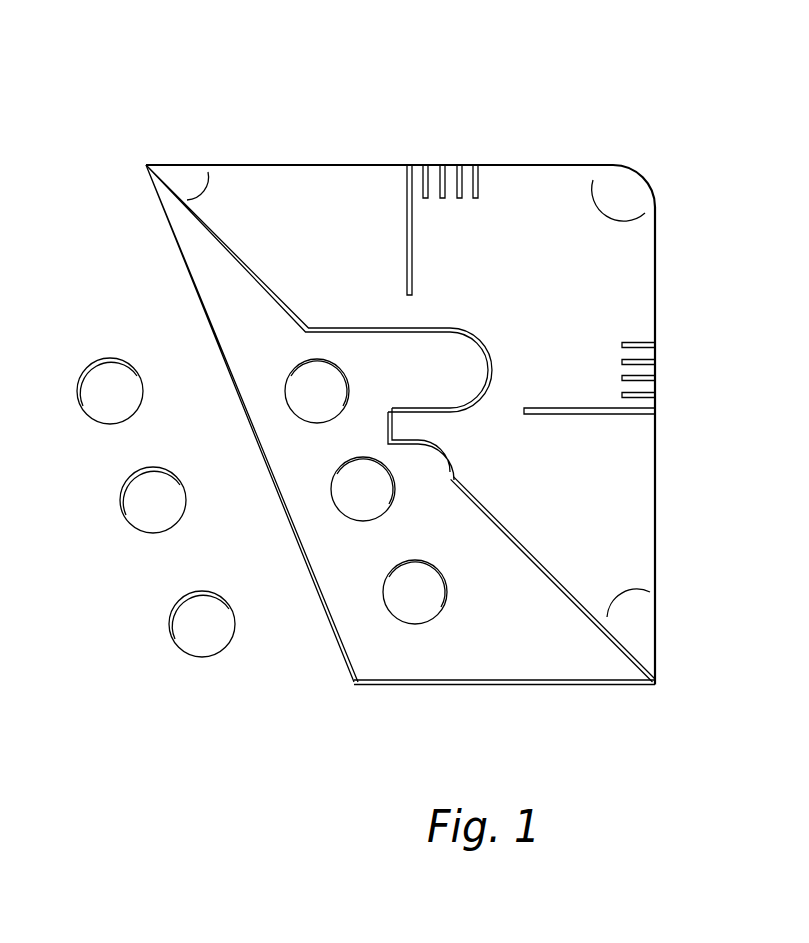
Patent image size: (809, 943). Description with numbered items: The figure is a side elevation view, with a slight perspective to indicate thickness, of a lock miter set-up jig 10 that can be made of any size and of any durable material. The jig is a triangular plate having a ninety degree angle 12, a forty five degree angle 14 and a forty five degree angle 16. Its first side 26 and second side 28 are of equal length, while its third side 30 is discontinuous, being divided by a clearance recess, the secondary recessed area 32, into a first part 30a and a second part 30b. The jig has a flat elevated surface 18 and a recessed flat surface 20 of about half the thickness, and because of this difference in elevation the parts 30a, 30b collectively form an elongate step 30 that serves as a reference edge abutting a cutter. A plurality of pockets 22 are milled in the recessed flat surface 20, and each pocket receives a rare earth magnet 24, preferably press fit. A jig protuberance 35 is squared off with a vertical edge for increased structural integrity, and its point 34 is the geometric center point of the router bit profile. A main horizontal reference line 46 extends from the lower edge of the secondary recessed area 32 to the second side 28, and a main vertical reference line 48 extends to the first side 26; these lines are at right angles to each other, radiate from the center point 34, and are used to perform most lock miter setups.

The lock miter set-up jig 10 is at (630, 132).
The ninety degree angle 12 is at (597, 217).
The forty five degree angle 14 is at (620, 590).
The forty five degree angle 16 is at (210, 192).
The flat elevated surface 18 is at (536, 322).
The recessed flat surface 20 is at (242, 332).
The pockets 22 is at (305, 383).
The rare earth magnet 24 is at (99, 405).
The first side 26 is at (327, 165).
The second side 28 is at (656, 318).
The third side 30 is at (364, 446).
The first part 30a is at (602, 627).
The second part 30b is at (200, 227).
The recessed area 32 is at (429, 382).
The point 34 is at (389, 409).
The jig protuberance 35 is at (402, 435).
The main horizontal reference line 46 is at (407, 243).
The main vertical reference line 48 is at (588, 413).